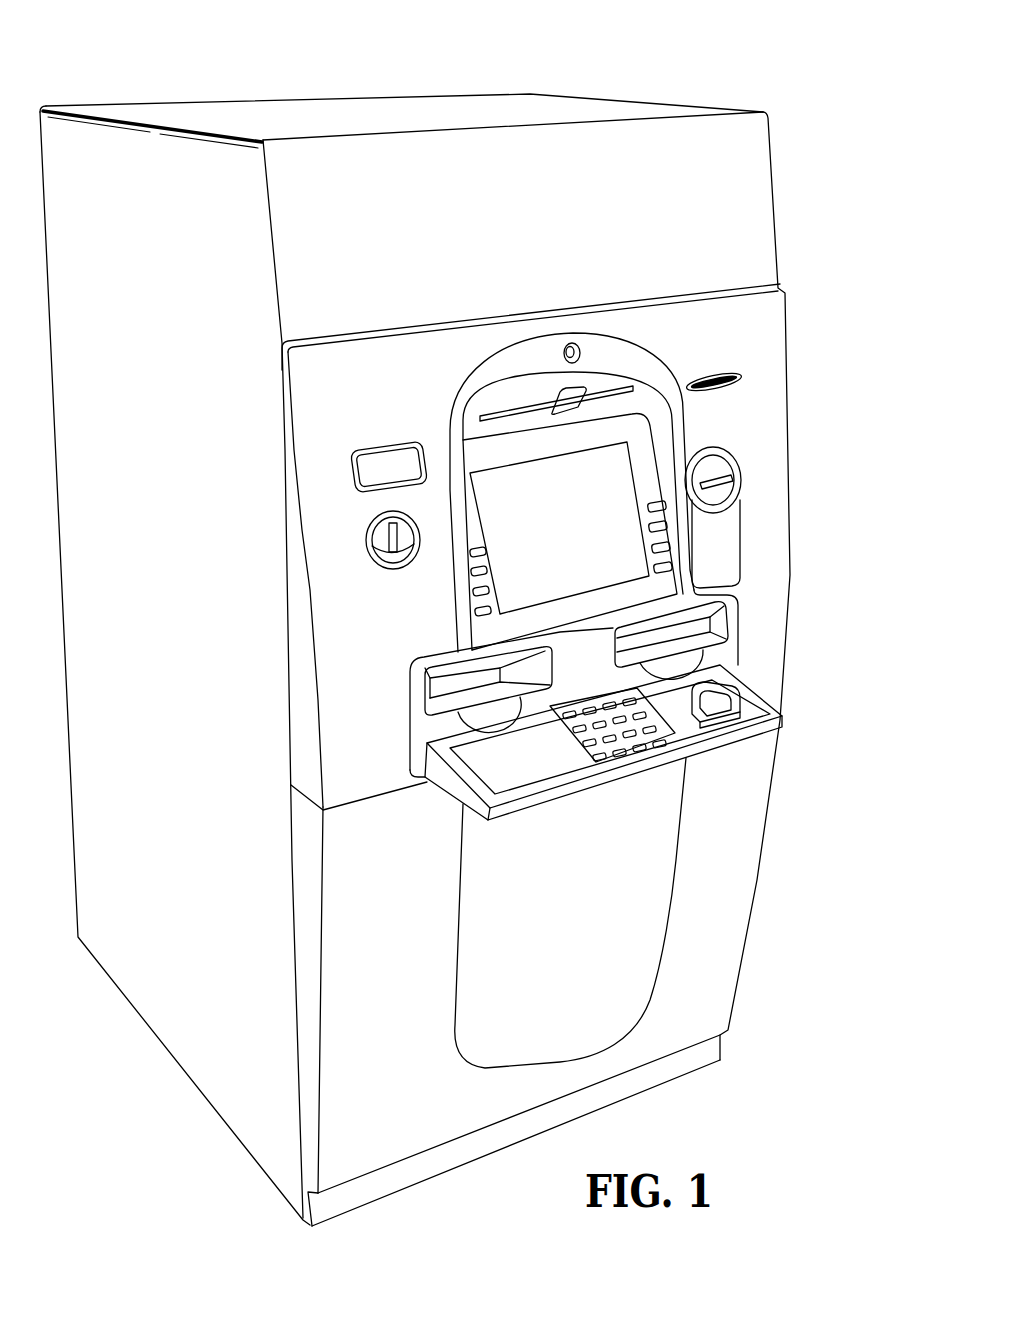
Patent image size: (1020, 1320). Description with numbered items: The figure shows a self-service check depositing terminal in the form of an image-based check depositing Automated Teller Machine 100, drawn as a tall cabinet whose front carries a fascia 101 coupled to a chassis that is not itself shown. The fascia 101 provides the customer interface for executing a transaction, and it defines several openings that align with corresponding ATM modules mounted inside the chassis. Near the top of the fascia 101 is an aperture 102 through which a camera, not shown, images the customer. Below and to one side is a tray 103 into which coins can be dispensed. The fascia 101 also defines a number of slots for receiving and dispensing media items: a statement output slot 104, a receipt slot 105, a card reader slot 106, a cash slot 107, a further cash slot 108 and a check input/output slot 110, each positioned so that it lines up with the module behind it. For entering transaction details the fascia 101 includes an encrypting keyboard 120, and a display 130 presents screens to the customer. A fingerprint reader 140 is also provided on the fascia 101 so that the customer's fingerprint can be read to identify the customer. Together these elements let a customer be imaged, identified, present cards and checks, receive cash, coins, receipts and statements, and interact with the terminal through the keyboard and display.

The Automated Teller Machine 100 is at (610, 64).
The fascia 101 is at (280, 408).
The aperture 102 is at (580, 343).
The tray 103 is at (368, 541).
The statement output slot 104 is at (605, 390).
The receipt slot 105 is at (733, 370).
The card reader slot 106 is at (738, 488).
The cash slot 107 is at (427, 690).
The further cash slot 108 is at (713, 625).
The check input/output slot 110 is at (352, 469).
The encrypting keyboard 120 is at (680, 731).
The display 130 is at (625, 448).
The fingerprint reader 140 is at (725, 698).